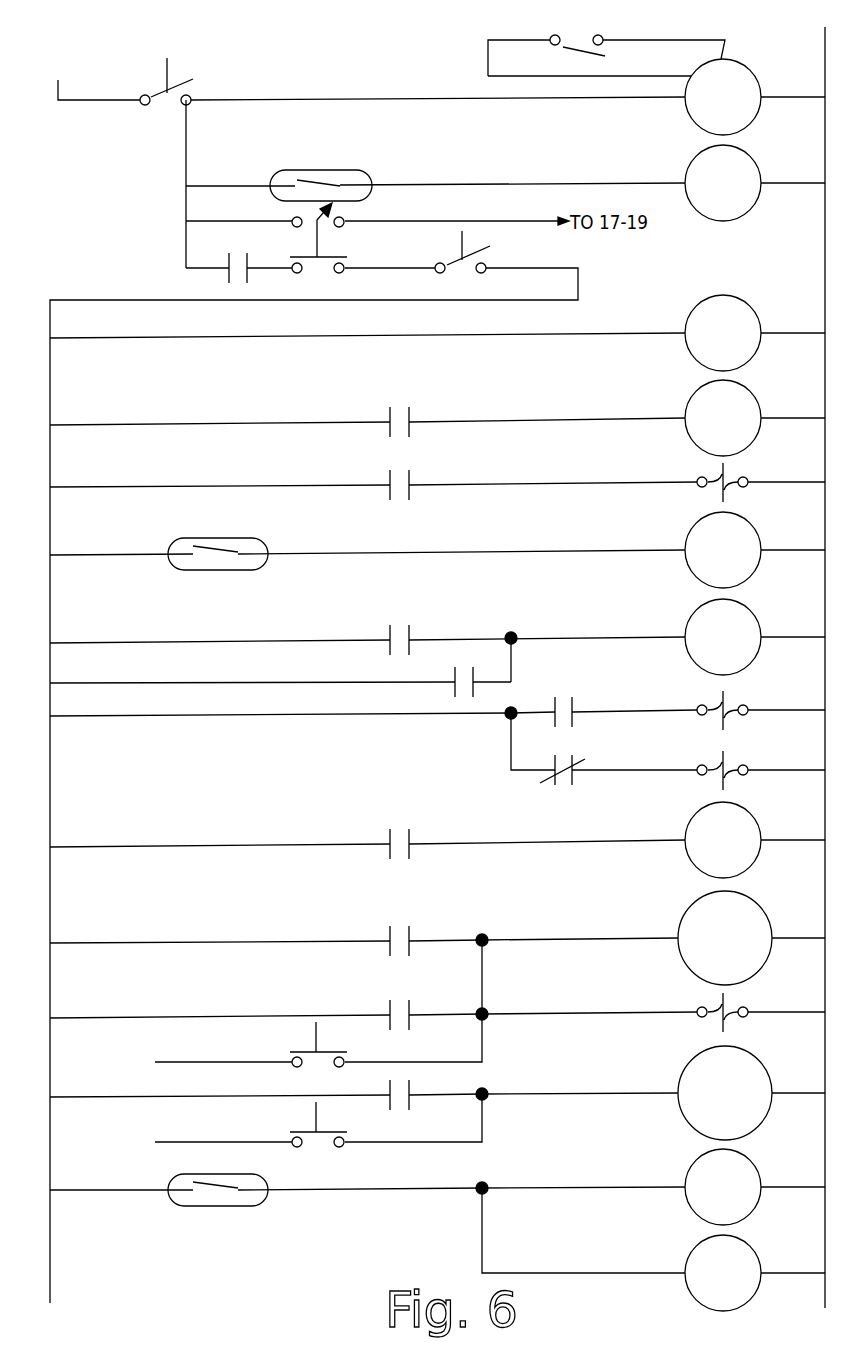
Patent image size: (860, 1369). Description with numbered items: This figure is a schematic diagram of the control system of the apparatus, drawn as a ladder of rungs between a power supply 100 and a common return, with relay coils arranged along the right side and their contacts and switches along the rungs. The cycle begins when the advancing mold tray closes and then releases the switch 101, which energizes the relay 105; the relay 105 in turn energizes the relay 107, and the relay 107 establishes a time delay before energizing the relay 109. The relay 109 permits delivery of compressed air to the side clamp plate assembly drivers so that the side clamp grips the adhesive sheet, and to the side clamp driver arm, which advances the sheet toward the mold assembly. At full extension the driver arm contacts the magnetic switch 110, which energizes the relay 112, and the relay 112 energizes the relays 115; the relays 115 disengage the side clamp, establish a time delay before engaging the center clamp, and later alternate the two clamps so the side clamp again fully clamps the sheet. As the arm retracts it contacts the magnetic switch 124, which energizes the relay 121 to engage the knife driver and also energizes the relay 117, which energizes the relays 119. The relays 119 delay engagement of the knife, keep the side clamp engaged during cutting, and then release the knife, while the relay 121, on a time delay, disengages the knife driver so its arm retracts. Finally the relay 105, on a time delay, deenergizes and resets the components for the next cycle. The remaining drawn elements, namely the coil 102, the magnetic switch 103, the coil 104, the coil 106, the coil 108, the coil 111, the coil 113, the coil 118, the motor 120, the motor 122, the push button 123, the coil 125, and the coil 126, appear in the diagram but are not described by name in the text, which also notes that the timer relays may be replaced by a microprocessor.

The 120 VAC power supply 100 is at (63, 52).
The switch 101 is at (578, 48).
The CFF delay relay 9 102 is at (750, 70).
The magnetic switch 3 103 is at (372, 180).
The safety relay 6 104 is at (750, 156).
The relay 105 is at (228, 281).
The on delay relay 1 106 is at (750, 306).
The relay 107 is at (411, 412).
The interval delay relay 2 108 is at (750, 391).
The relay 109 is at (411, 475).
The magnetic switch 110 is at (218, 570).
The on delay relay 8 111 is at (750, 523).
The relay 112 is at (411, 630).
The interval delay relay 3 113 is at (750, 610).
The relays 115 is at (520, 793).
The relay 117 is at (388, 835).
The interval delay relay 4 118 is at (750, 813).
The relays 119 is at (387, 947).
The cutter motor / push button PB 1 120 is at (758, 904).
The relay 121 is at (410, 1110).
The feed motor 122 is at (758, 1059).
The push button PB 2 123 is at (306, 1130).
The magnetic switch 124 is at (225, 1206).
The on delay relay 7 125 is at (750, 1160).
The interval delay relay 5 126 is at (653, 1249).